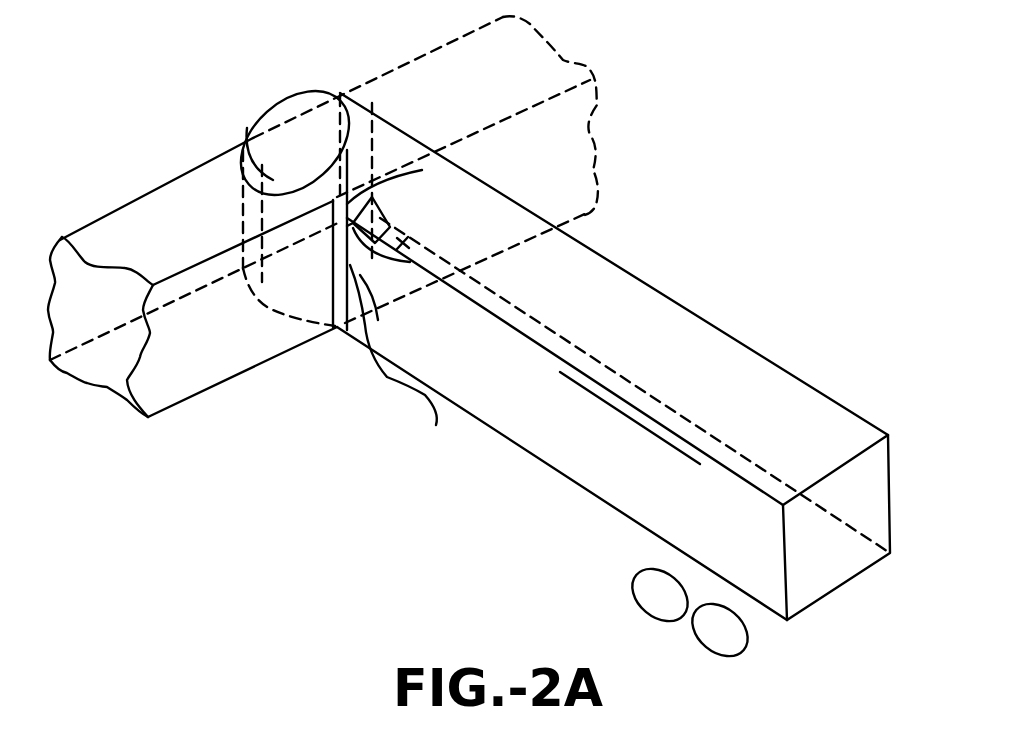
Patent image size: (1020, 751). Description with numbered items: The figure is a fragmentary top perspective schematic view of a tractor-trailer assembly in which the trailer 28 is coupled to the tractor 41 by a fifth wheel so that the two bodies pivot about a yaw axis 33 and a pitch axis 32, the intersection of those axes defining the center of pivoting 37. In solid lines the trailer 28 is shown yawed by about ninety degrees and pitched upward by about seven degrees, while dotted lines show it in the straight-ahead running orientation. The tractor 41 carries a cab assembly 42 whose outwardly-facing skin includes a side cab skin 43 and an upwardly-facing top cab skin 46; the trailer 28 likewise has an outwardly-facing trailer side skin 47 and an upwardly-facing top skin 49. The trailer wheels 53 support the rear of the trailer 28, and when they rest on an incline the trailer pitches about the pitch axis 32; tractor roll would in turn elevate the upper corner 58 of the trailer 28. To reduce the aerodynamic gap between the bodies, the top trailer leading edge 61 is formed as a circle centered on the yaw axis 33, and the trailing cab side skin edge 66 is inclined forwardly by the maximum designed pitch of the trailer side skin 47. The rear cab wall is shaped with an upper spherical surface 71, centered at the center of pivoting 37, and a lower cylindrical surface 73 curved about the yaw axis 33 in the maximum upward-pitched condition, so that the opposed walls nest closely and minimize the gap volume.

The trailer 28 is at (446, 44).
The pitch axis 32 is at (378, 338).
The yaw axis 33 is at (390, 221).
The center of pivoting 37 is at (384, 258).
The tractor 41 is at (175, 415).
The cab assembly 42 is at (222, 364).
The side cab skin 43 is at (213, 344).
The top cab skin 46 is at (198, 240).
The trailer side skin 47 is at (552, 406).
The top skin 49 is at (326, 170).
The trailer wheels 53 is at (714, 644).
The upper corner 58 is at (397, 212).
The top trailer leading edge 61 is at (290, 93).
The trailing cab side skin edge 66 is at (393, 354).
The upper spherical surface 71 is at (240, 126).
The lower cylindrical surface 73 is at (318, 338).